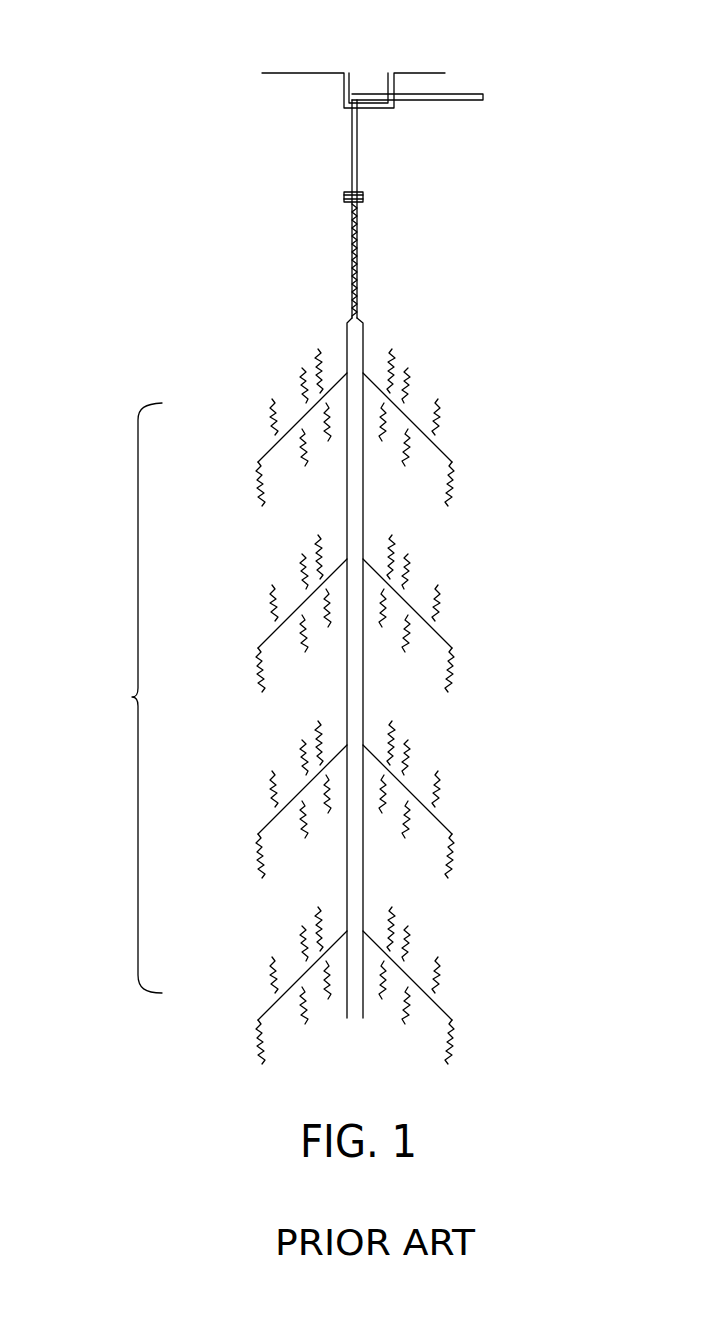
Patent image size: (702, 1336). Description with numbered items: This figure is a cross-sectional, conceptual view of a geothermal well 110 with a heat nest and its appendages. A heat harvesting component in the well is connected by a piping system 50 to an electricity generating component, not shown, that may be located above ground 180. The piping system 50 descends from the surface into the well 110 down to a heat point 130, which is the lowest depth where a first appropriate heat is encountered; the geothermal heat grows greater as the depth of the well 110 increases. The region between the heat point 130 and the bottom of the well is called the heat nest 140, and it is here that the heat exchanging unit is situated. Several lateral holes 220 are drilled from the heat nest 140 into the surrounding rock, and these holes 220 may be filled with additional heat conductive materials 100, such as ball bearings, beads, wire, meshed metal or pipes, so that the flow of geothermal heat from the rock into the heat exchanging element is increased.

The above ground 180 is at (306, 66).
The piping system 50 is at (364, 287).
The heat point 130 is at (337, 318).
The well 110 is at (459, 531).
The additional heat conductive materials 100 is at (267, 439).
The lateral holes 220 is at (440, 450).
The heat nest 140 is at (132, 697).